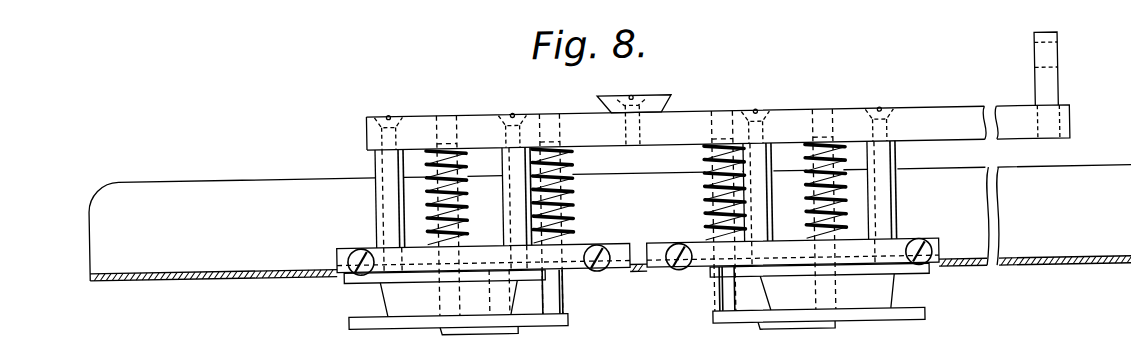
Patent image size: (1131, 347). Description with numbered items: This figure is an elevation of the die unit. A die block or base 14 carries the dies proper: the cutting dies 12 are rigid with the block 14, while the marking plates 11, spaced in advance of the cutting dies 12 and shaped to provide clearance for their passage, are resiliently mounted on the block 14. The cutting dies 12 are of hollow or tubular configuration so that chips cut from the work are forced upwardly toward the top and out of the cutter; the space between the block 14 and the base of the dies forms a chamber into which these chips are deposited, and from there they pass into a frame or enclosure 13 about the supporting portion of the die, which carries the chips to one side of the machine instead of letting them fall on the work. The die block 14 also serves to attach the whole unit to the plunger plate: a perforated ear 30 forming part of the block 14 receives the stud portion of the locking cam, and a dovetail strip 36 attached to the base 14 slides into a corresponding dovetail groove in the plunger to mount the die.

The marking plate 11 is at (477, 340).
The cutting die 12 is at (387, 305).
The frame or enclosure 13 is at (1070, 255).
The die block or base 14 is at (920, 98).
The perforated ear 30 is at (1049, 66).
The dovetail strip 36 is at (658, 106).